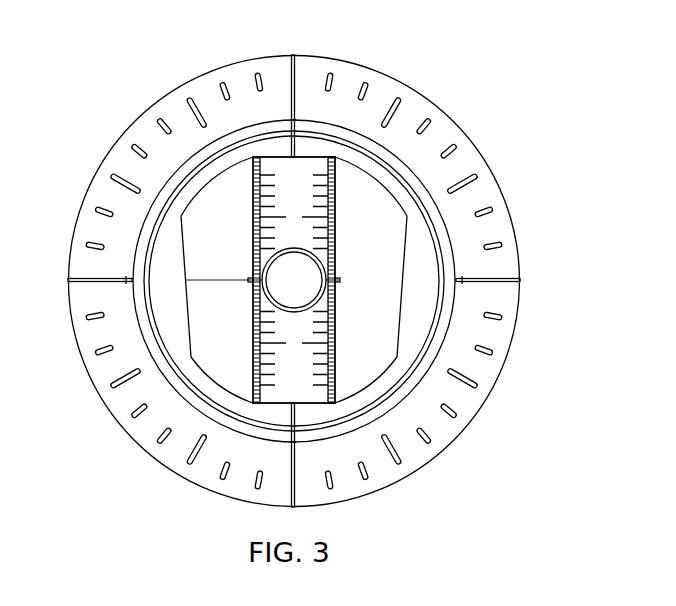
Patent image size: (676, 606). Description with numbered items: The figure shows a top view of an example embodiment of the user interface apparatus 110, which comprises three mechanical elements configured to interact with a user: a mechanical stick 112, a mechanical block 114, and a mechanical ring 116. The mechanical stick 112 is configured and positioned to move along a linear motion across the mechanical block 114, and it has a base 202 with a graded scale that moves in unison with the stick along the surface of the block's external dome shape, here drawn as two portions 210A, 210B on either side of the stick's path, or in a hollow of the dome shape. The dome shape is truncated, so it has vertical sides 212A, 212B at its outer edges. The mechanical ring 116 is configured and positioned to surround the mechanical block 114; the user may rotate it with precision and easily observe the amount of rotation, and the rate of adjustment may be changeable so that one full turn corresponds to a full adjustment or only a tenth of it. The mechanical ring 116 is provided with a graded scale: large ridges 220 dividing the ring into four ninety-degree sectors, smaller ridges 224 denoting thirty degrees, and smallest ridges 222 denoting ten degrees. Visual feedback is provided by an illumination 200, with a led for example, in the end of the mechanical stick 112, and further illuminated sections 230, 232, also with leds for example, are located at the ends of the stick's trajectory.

The user interface apparatus 110 is at (80, 70).
The mechanical stick 112 is at (266, 263).
The mechanical block 114 is at (185, 300).
The mechanical ring 116 is at (69, 263).
The illumination 200 is at (310, 296).
The base 202 is at (312, 399).
The external dome shape 210A is at (243, 316).
The external dome shape 210B is at (392, 290).
The vertical side 212A is at (188, 318).
The vertical side 212B is at (398, 317).
The large ridges 220 is at (293, 55).
The smallest ridges 222 is at (366, 82).
The smaller ridges 224 is at (399, 97).
The illuminated section 230 is at (294, 413).
The illuminated section 232 is at (294, 151).